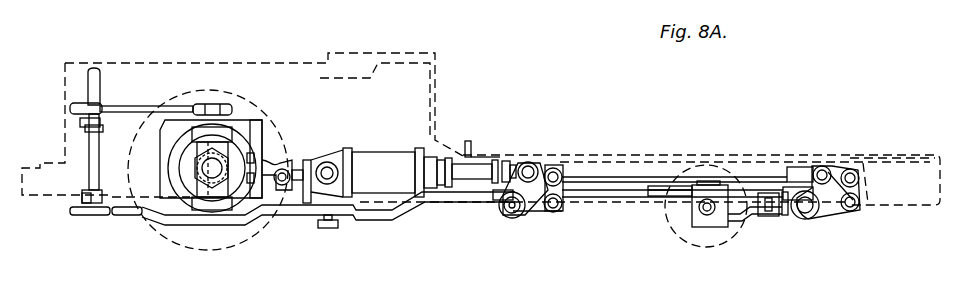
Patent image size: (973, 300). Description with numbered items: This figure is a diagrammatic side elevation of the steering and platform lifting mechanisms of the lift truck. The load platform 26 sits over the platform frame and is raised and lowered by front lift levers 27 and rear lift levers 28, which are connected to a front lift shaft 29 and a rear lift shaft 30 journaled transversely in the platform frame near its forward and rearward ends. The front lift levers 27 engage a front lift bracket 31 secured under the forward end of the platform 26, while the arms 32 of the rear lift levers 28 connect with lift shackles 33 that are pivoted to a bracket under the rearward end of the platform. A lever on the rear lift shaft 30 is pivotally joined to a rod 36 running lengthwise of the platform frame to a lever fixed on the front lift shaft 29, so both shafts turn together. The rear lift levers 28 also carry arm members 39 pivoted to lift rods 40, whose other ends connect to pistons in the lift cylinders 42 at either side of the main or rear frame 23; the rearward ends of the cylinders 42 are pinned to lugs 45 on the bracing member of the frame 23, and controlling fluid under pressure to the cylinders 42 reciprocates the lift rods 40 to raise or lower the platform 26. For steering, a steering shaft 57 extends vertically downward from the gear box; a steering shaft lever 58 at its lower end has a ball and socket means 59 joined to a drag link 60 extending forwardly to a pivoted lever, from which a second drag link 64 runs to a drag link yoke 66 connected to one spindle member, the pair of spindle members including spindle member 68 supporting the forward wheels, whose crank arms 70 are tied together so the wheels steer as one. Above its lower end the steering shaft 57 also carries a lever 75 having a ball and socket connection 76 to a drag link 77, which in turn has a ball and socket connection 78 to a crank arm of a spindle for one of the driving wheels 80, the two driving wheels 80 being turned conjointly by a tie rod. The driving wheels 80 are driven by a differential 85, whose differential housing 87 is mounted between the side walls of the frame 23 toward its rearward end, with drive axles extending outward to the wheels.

The main or rear frame assembly 23 is at (182, 63).
The load platform 26 is at (910, 160).
The front lift levers 27 is at (828, 212).
The rear lift levers 28 is at (536, 211).
The front lift shaft 29 is at (805, 213).
The rear lift shaft 30 is at (509, 215).
The front lift bracket 31 is at (851, 167).
The arms of the rear lift levers 32 is at (530, 213).
The lift shackles 33 is at (572, 180).
The rod 36 is at (641, 172).
The arm members 39 is at (516, 165).
The lift rods 40 is at (470, 170).
The lift cylinders 42 is at (378, 162).
The lugs 45 is at (322, 219).
The steering shaft 57 is at (88, 78).
The steering shaft lever 58 is at (83, 190).
The ball and socket means 59 is at (73, 214).
The drag link 60 is at (128, 217).
The second drag link 64 is at (462, 194).
The drag link yoke 66 is at (663, 192).
The spindle member 68 is at (718, 190).
The crank arms 70 is at (744, 213).
The lever 75 is at (80, 122).
The ball and socket connection 76 is at (100, 105).
The drag link 77 is at (132, 108).
The ball and socket connection 78 is at (222, 106).
The driving wheels 80 is at (246, 122).
The differential 85 is at (268, 135).
The differential housing 87 is at (250, 128).